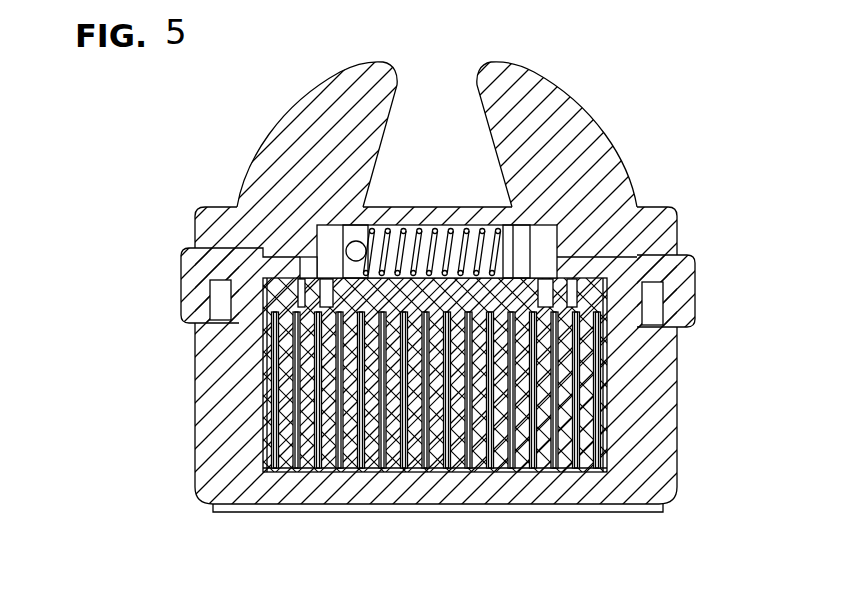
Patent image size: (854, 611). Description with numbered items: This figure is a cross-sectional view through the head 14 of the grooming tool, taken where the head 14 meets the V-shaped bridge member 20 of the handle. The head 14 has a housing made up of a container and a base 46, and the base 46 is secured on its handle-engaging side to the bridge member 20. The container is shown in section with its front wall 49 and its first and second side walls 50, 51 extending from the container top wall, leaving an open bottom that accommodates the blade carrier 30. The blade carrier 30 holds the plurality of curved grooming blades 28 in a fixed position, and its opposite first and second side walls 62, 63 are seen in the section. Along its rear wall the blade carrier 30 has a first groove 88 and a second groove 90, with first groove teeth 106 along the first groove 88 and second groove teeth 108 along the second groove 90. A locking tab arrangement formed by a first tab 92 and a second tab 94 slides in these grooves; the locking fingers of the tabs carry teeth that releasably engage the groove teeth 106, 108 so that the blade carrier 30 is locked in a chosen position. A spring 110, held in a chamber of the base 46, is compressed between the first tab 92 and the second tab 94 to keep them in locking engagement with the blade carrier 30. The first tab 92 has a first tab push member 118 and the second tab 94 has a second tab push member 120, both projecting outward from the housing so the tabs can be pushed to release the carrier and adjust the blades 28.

The head 14 is at (395, 318).
The bridge member 20 is at (292, 108).
The grooming blades 28 is at (597, 408).
The blade carrier 30 is at (565, 462).
The base 46 is at (197, 231).
The front wall 49 is at (352, 498).
The first side wall 50 is at (680, 440).
The second side wall 51 is at (195, 367).
The first side wall 62 is at (433, 426).
The second side wall 63 is at (262, 375).
The first groove 88 is at (540, 297).
The second groove 90 is at (368, 262).
The first tab 92 is at (664, 276).
The second tab 94 is at (202, 281).
The first groove teeth 106 is at (573, 298).
The second groove teeth 108 is at (303, 290).
The spring 110 is at (428, 207).
The first tab push member 118 is at (695, 288).
The second tab push member 120 is at (182, 285).